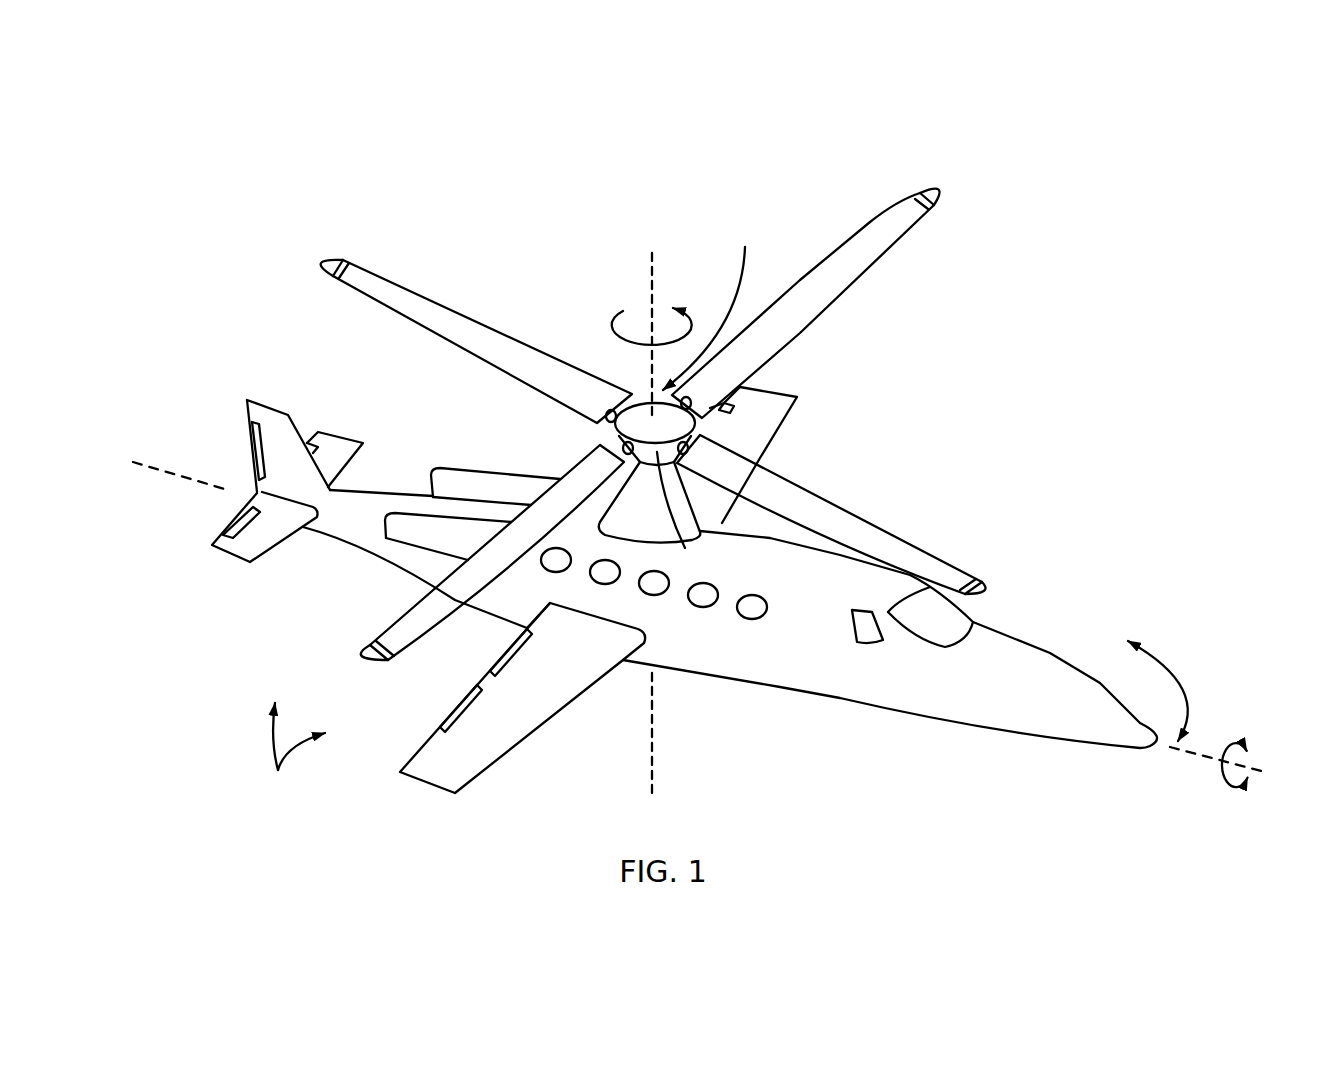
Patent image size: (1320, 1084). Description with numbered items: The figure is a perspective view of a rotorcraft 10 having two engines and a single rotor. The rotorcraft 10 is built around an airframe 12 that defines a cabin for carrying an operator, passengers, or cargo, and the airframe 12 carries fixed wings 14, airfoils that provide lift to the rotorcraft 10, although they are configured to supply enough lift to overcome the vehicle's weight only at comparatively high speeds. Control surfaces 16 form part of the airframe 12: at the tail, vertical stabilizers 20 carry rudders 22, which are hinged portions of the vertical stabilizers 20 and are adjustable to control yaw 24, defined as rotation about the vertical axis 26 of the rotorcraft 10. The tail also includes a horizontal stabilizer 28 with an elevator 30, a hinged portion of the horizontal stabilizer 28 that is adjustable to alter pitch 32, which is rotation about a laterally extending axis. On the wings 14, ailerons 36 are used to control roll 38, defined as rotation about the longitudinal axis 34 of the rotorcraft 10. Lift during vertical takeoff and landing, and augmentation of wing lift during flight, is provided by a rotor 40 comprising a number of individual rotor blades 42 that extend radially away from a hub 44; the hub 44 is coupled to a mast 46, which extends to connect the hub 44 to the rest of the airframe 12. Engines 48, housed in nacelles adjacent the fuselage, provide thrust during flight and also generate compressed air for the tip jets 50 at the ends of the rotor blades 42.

The rotorcraft 10 is at (997, 405).
The airframe 12 is at (795, 683).
The fixed wing 14 is at (760, 433).
The control surfaces 16 is at (293, 749).
The vertical stabilizer 20 is at (272, 420).
The rudder 22 is at (253, 450).
The yaw 24 is at (622, 311).
The vertical axis 26 is at (653, 267).
The horizontal stabilizer 28 is at (265, 537).
The elevator 30 is at (232, 523).
The pitch 32 is at (1177, 677).
The longitudinal axis 34 is at (1200, 752).
The aileron 36 is at (735, 408).
The roll 38 is at (1231, 789).
The rotor 40 is at (710, 305).
The rotor blade 42 is at (450, 312).
The hub 44 is at (677, 540).
The mast 46 is at (647, 507).
The engine 48 is at (470, 483).
The tip jet 50 is at (340, 260).